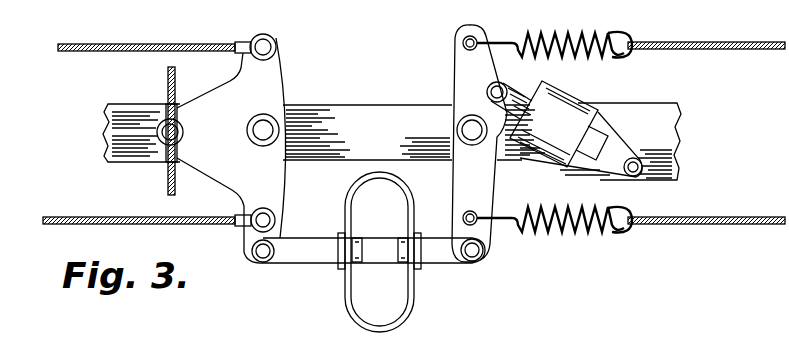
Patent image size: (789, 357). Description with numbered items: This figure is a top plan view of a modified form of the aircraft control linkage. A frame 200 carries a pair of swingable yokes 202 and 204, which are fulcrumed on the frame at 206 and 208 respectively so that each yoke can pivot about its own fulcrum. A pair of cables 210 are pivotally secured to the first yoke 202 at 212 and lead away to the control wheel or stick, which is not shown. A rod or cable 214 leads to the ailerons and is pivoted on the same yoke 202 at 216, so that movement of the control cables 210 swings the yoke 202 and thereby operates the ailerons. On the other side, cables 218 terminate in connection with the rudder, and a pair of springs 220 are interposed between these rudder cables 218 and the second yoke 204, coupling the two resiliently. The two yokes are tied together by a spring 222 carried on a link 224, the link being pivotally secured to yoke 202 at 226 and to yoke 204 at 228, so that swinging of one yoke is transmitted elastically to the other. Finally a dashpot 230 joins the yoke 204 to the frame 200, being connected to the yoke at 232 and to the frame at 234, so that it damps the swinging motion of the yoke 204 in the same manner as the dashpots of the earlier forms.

The frame 200 is at (362, 105).
The yoke 202 is at (248, 110).
The yoke 204 is at (498, 174).
The fulcrum 206 is at (279, 130).
The fulcrum 208 is at (457, 130).
The cables 210 is at (116, 45).
The pivot 212 is at (278, 44).
The cables 214 is at (168, 88).
The pivot 216 is at (143, 133).
The cables 218 is at (706, 42).
The springs 220 is at (596, 36).
The spring 222 is at (405, 204).
The link 224 is at (312, 251).
The pivot 226 is at (256, 262).
The pivot 228 is at (481, 261).
The dashpot 230 is at (582, 120).
The pivot 232 is at (508, 88).
The pivot 234 is at (637, 158).